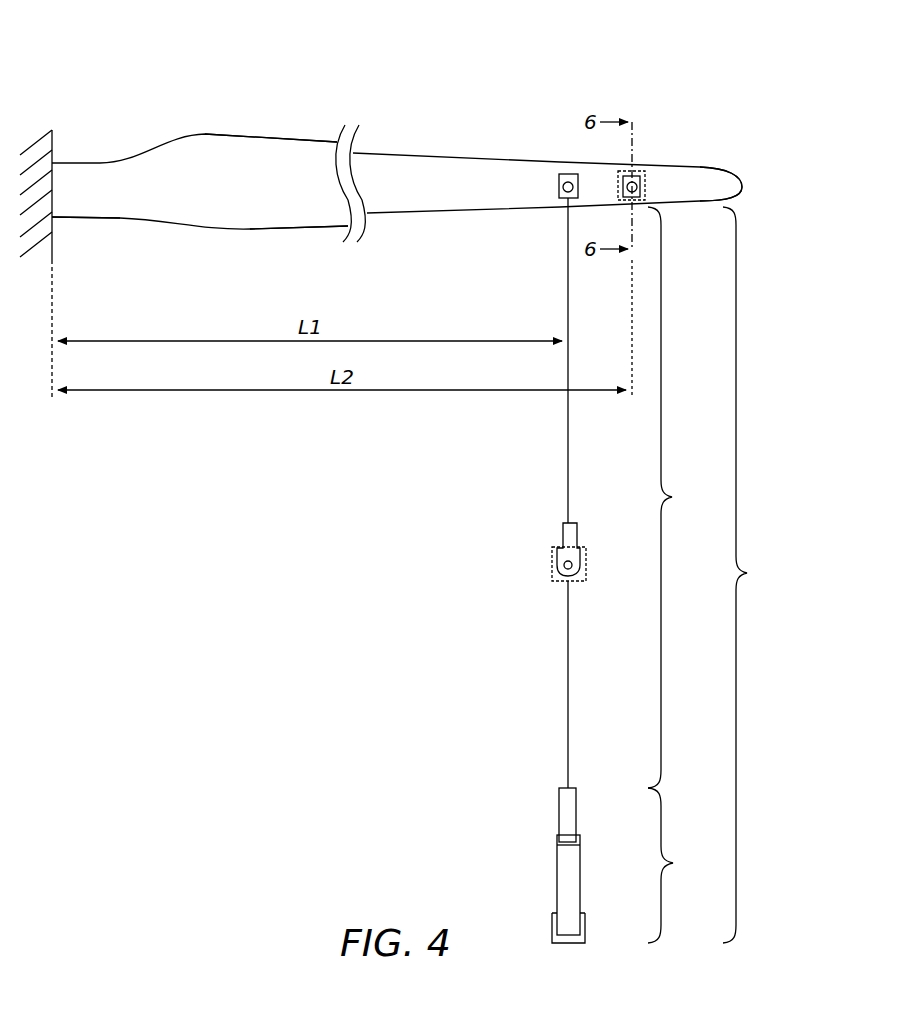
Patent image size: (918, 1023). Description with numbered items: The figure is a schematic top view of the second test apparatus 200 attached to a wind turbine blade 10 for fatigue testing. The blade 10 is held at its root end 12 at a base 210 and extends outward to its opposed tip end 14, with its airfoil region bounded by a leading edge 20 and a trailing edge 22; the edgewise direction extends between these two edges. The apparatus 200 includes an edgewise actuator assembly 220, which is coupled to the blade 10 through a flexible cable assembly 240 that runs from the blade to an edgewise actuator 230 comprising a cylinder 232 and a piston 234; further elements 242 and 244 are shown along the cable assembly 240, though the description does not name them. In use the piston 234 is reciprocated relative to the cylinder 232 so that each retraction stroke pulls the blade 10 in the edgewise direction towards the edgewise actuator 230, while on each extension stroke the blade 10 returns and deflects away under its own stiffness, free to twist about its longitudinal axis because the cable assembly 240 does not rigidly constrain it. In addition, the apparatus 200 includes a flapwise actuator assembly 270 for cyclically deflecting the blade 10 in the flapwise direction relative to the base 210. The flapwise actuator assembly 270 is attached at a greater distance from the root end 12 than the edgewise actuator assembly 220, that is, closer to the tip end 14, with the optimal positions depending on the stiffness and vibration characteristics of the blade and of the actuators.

The wind turbine blade 10 is at (440, 134).
The root end 12 is at (76, 219).
The tip end 14 is at (740, 186).
The leading edge 20 is at (213, 232).
The trailing edge 22 is at (230, 134).
The second test apparatus 200 is at (163, 75).
The base 210 is at (55, 133).
The edgewise actuator assembly 220 is at (757, 575).
The edgewise actuator 230 is at (684, 865).
The cylinder 232 is at (582, 875).
The piston 234 is at (578, 808).
The flexible cable assembly 240 is at (684, 497).
The first tether 242 is at (570, 447).
The second tether 244 is at (570, 680).
The flapwise actuator assembly 270 is at (648, 150).